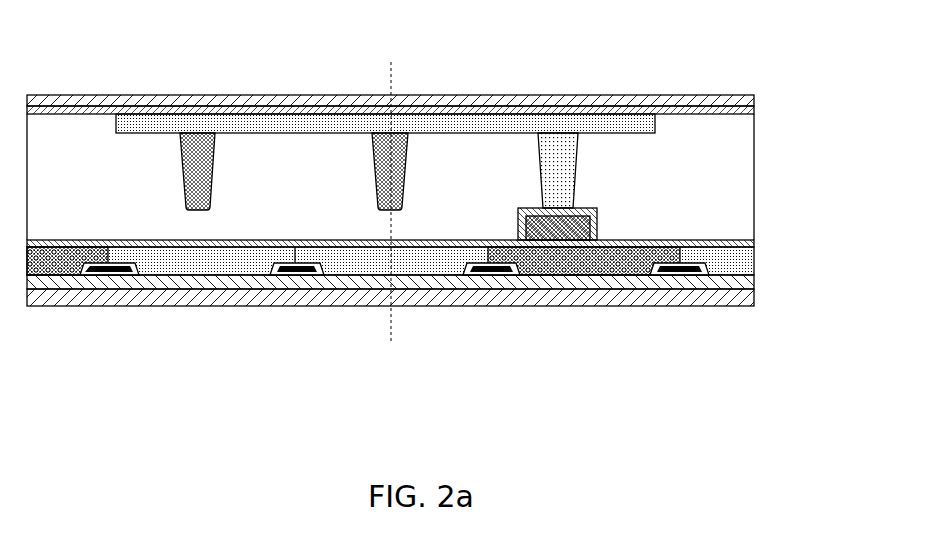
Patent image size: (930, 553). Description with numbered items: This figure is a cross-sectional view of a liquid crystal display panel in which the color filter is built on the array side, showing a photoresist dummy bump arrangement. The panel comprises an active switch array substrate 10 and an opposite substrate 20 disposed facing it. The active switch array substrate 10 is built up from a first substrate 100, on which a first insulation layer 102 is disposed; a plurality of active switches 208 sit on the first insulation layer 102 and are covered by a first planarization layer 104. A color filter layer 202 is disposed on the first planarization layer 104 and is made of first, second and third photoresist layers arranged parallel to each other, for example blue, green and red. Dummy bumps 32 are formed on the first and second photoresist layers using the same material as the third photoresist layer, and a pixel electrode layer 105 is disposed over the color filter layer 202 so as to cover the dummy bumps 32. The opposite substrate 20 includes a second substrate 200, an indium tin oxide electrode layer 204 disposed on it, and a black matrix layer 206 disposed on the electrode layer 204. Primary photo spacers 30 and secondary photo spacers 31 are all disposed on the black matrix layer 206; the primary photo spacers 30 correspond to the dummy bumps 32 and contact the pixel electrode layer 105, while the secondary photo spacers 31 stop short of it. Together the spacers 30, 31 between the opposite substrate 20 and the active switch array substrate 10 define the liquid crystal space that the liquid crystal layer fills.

The opposite substrate 20 is at (423, 131).
The second substrate 200 is at (737, 102).
The indium tin oxide electrode layer 204 is at (742, 110).
The black matrix layer 206 is at (543, 95).
The secondary photo spacers 31 is at (377, 168).
The primary photo spacers 30 is at (575, 168).
The dummy bumps 32 is at (598, 218).
The first substrate 100 is at (422, 290).
The pixel electrode layer 105 is at (733, 246).
The color filter layer 202 is at (740, 260).
The active switches 208 is at (298, 291).
The first planarization layer 104 is at (738, 282).
The first insulation layer 102 is at (745, 298).
The active switch array substrate 10 is at (638, 316).